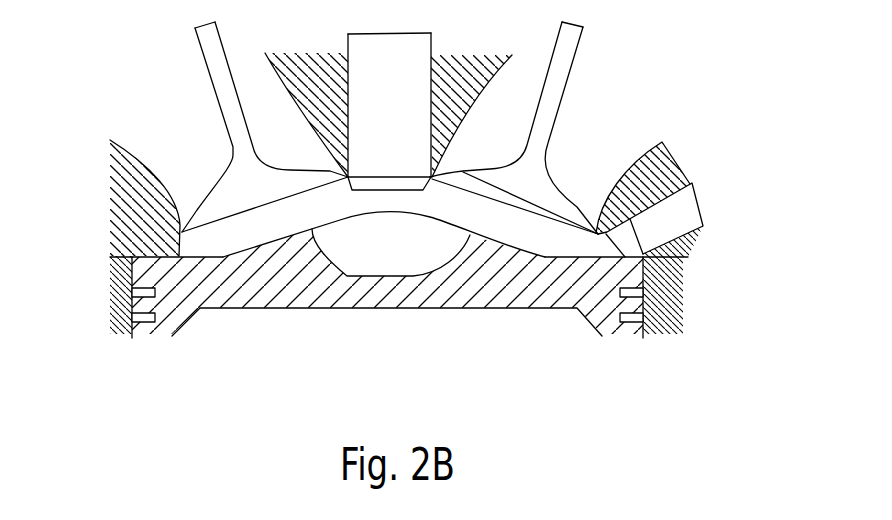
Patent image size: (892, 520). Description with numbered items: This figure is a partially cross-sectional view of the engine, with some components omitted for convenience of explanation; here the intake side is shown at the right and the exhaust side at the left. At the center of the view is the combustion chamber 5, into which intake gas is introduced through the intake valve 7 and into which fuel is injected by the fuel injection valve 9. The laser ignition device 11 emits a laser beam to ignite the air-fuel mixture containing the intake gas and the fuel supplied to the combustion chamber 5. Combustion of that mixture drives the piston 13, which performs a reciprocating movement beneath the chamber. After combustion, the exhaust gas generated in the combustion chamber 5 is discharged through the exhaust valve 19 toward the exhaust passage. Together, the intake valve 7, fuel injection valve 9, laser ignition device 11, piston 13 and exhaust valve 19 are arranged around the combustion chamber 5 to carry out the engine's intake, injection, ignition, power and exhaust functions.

The combustion chamber 5 is at (497, 222).
The intake valve 7 is at (571, 65).
The fuel injection valve 9 is at (692, 183).
The laser ignition device 11 is at (431, 38).
The piston 13 is at (327, 297).
The exhaust valve 19 is at (207, 67).